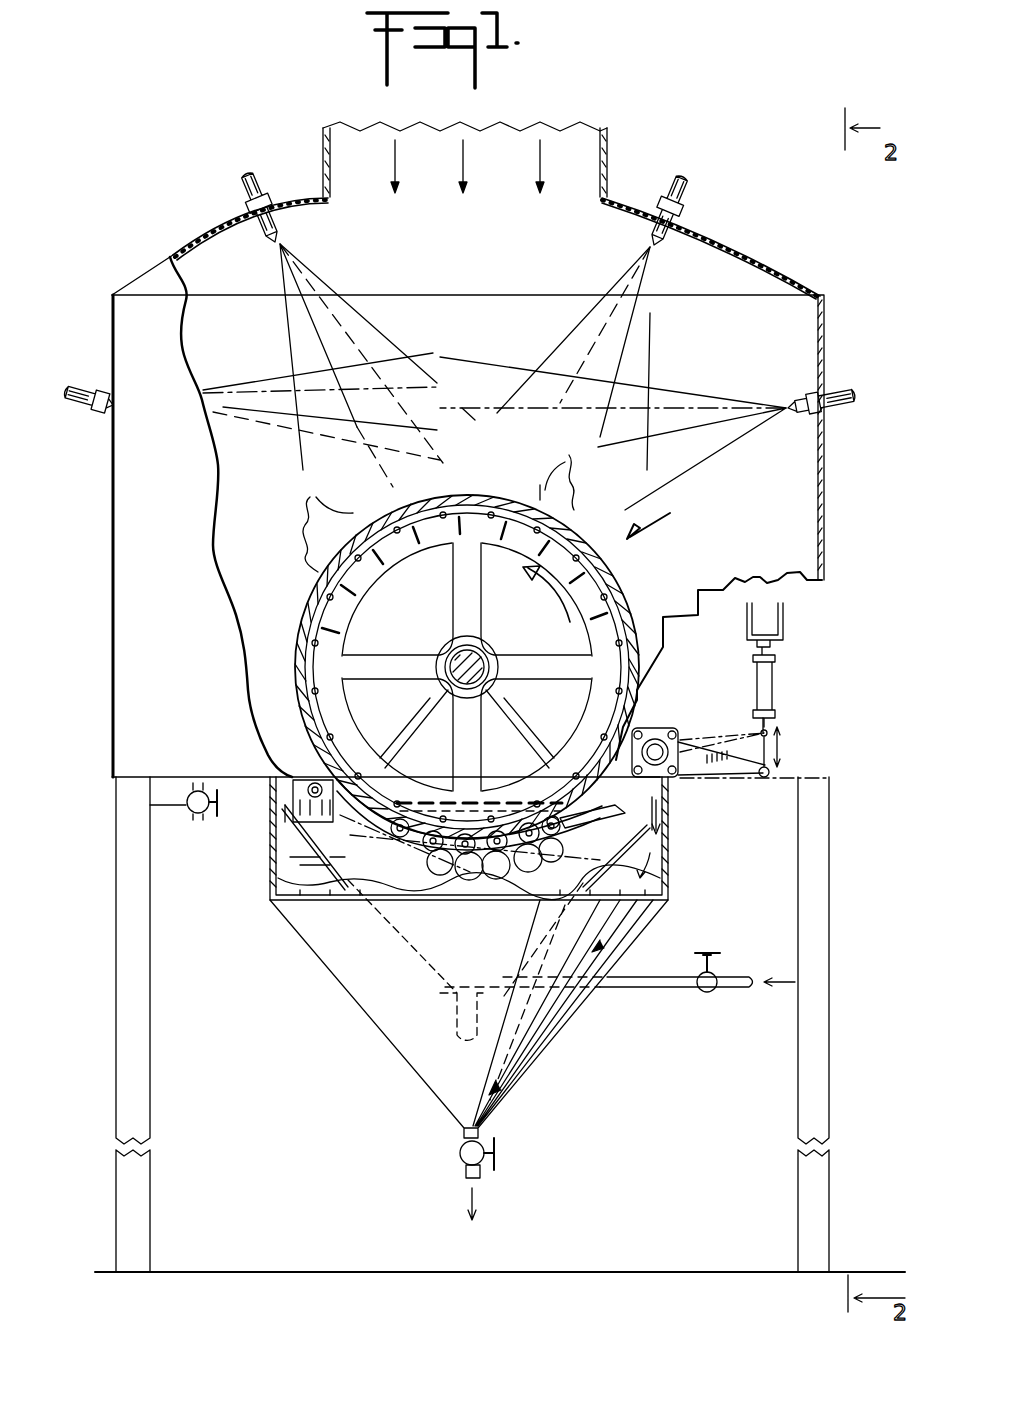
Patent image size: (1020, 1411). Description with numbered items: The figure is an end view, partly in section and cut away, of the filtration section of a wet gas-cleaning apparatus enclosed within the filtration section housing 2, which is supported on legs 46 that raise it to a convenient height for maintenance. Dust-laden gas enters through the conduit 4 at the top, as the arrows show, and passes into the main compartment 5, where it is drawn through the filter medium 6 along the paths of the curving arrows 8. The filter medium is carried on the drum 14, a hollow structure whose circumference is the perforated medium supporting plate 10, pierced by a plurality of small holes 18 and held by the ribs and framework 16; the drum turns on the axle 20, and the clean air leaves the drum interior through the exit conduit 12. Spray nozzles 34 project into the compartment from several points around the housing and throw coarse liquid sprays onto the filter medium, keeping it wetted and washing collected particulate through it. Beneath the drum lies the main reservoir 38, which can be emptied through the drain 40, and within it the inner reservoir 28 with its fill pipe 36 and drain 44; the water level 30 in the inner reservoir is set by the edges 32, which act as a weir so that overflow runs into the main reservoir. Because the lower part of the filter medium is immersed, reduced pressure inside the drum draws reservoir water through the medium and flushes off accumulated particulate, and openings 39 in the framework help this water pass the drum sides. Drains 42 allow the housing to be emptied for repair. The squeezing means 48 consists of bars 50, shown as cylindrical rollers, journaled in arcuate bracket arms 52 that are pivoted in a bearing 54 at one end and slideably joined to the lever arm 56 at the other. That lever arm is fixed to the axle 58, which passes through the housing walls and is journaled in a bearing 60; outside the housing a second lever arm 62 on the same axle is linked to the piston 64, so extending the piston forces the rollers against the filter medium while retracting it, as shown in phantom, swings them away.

The filtration section housing 2 is at (176, 604).
The conduit 4 is at (444, 165).
The main compartment 5 is at (484, 366).
The filter medium 6 is at (605, 588).
The curving arrows 8 is at (438, 502).
The perforated medium supporting plate 10 is at (456, 667).
The exit conduit 12 is at (533, 626).
The drum 14 is at (663, 519).
The ribs and framework 16 is at (450, 606).
The small holes 18 is at (438, 530).
The axle 20 is at (448, 656).
The inner reservoir 28 is at (278, 867).
The water level 30 is at (434, 789).
The edges 32 is at (287, 810).
The spray nozzles 34 is at (283, 226).
The fill pipe 36 is at (665, 988).
The main reservoir 38 is at (670, 840).
The openings 39 is at (320, 780).
The drain 40 is at (462, 1143).
The drains 42 is at (190, 808).
The drain 44 is at (452, 1017).
The legs 46 is at (150, 986).
The squeezing means 48 is at (452, 876).
The bars 50 is at (532, 835).
The bracket arms 52 is at (520, 868).
The bearing 54 is at (300, 782).
The lever arm 56 is at (650, 798).
The axle 58 is at (648, 735).
The bearing 60 is at (720, 782).
The lever arm 62 is at (688, 745).
The piston 64 is at (755, 678).